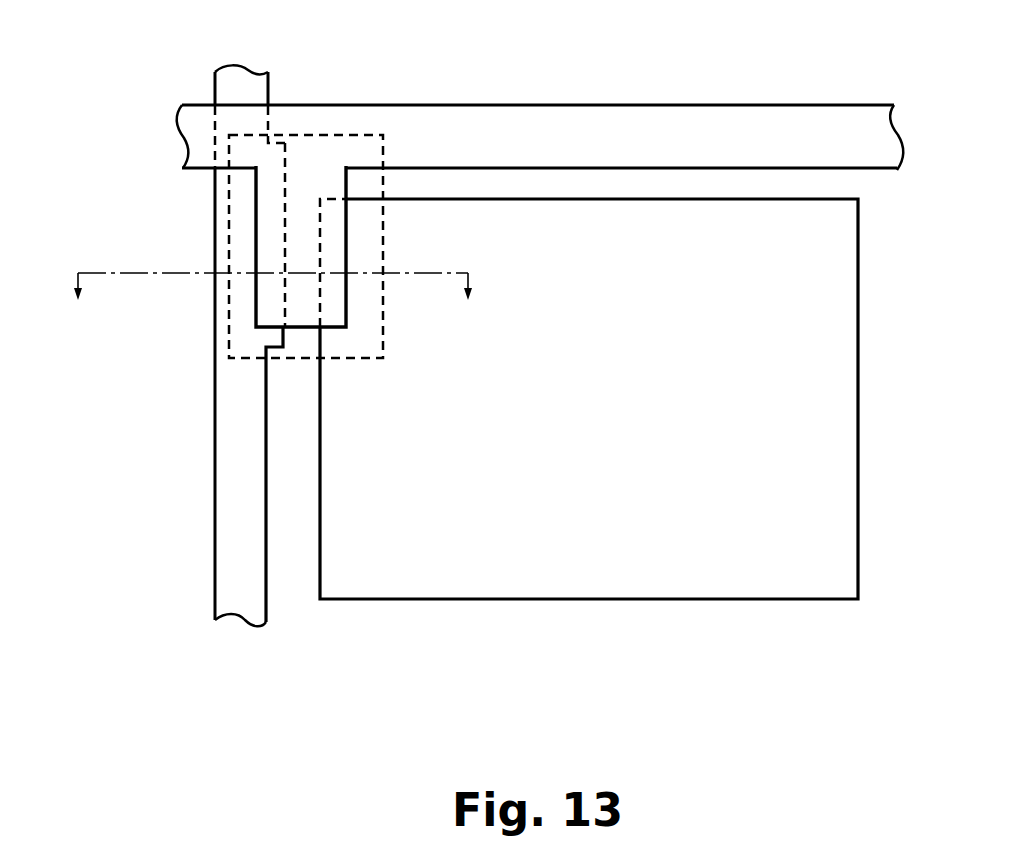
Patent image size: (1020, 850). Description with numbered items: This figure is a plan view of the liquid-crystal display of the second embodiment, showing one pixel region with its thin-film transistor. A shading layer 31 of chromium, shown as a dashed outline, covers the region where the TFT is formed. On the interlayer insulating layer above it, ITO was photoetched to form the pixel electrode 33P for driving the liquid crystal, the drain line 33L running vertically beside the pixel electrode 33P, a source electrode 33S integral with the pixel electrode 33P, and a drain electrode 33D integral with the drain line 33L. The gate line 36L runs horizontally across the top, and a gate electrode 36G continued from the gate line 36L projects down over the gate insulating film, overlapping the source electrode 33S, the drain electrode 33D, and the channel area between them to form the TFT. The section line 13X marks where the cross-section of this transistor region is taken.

The shading layer 31 is at (307, 134).
The pixel electrode 33P is at (537, 222).
The gate line 36L is at (682, 138).
The gate electrode 36G is at (288, 253).
The drain electrode 33D is at (266, 212).
The source electrode 33S is at (328, 302).
The drain line 33L is at (245, 427).
The section line 13X-13X' 13X is at (265, 307).